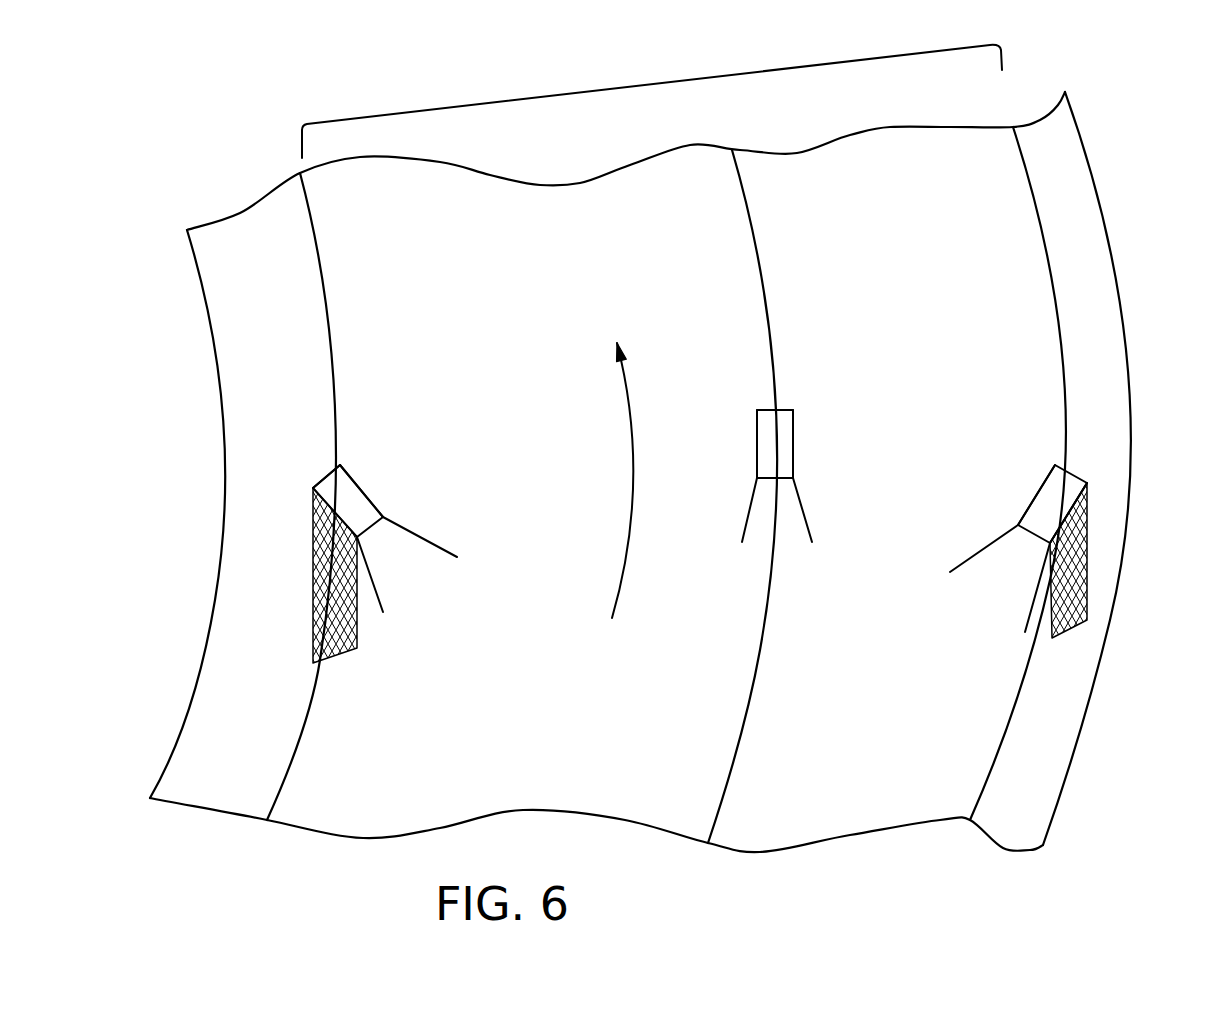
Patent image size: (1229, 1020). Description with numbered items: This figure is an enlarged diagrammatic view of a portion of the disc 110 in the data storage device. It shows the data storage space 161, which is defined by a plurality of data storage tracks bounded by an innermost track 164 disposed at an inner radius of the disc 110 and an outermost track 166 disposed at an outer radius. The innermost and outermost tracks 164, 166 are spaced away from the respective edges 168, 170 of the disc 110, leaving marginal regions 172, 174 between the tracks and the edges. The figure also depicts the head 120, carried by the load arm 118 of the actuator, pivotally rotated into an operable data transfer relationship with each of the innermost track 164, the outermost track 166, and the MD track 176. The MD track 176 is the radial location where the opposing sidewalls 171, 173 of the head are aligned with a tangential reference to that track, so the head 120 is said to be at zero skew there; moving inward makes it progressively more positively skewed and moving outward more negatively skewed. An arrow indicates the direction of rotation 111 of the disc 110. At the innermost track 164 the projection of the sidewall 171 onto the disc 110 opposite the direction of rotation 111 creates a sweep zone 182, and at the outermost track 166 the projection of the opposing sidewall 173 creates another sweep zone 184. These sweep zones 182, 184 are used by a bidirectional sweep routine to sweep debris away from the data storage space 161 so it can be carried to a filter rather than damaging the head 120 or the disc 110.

The disc 110 is at (890, 127).
The data storage space 161 is at (572, 90).
The innermost track 164 is at (325, 282).
The outermost track 166 is at (1053, 275).
The MD track 176 is at (757, 242).
The edge 168 is at (220, 560).
The edge 170 is at (1125, 337).
The first flap 172 is at (215, 769).
The second flap 174 is at (1003, 809).
The direction of rotation 111 is at (632, 455).
The read/write transducer 120 is at (333, 463).
The sidewall 171 is at (315, 496).
The opposing sidewall 173 is at (368, 492).
The load arm 118 is at (440, 545).
The sweep zone 182 is at (342, 658).
The sweep zone 184 is at (1070, 633).